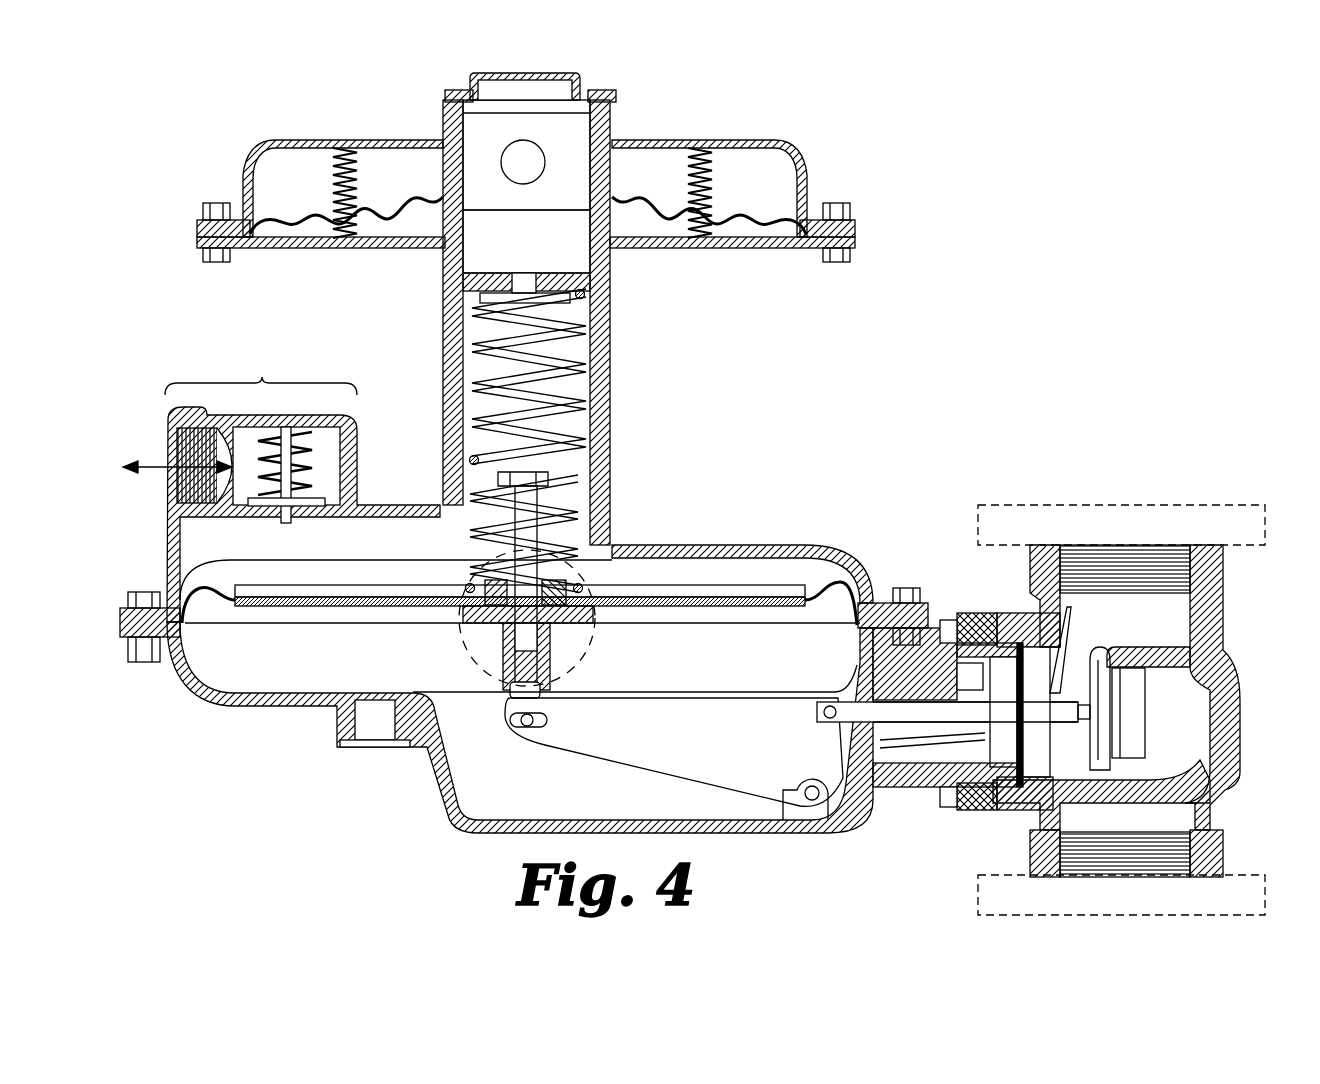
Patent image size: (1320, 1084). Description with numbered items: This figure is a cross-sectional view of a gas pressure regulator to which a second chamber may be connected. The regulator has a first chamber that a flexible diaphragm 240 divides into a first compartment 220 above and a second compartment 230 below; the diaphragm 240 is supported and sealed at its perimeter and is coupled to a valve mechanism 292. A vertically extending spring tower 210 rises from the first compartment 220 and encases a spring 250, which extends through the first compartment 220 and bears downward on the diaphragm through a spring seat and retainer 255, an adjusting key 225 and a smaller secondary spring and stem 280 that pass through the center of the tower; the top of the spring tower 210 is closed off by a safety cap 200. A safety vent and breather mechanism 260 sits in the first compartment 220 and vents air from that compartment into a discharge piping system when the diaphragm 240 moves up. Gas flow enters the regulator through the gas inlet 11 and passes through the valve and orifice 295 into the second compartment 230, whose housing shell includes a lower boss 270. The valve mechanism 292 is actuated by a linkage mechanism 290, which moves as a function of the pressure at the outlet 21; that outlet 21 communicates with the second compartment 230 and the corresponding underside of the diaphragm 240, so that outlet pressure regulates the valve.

The safety cap 200 is at (578, 77).
The spring tower 210 is at (598, 233).
The spring seat key 225 is at (523, 278).
The spring retainer plate 255 is at (466, 293).
The spring 250 is at (590, 332).
The safety vent and breather mechanism 260 is at (281, 486).
The secondary spring and stem 280 is at (557, 548).
The first compartment 220 is at (826, 567).
The diaphragm 240 is at (258, 608).
The second compartment 230 is at (210, 670).
The lower housing boss 270 is at (283, 703).
The linkage mechanism 290 is at (623, 752).
The valve mechanism 292 is at (1112, 650).
The valve and orifice 295 is at (1112, 742).
The outlet 21 is at (1125, 530).
The gas inlet 11 is at (1123, 878).